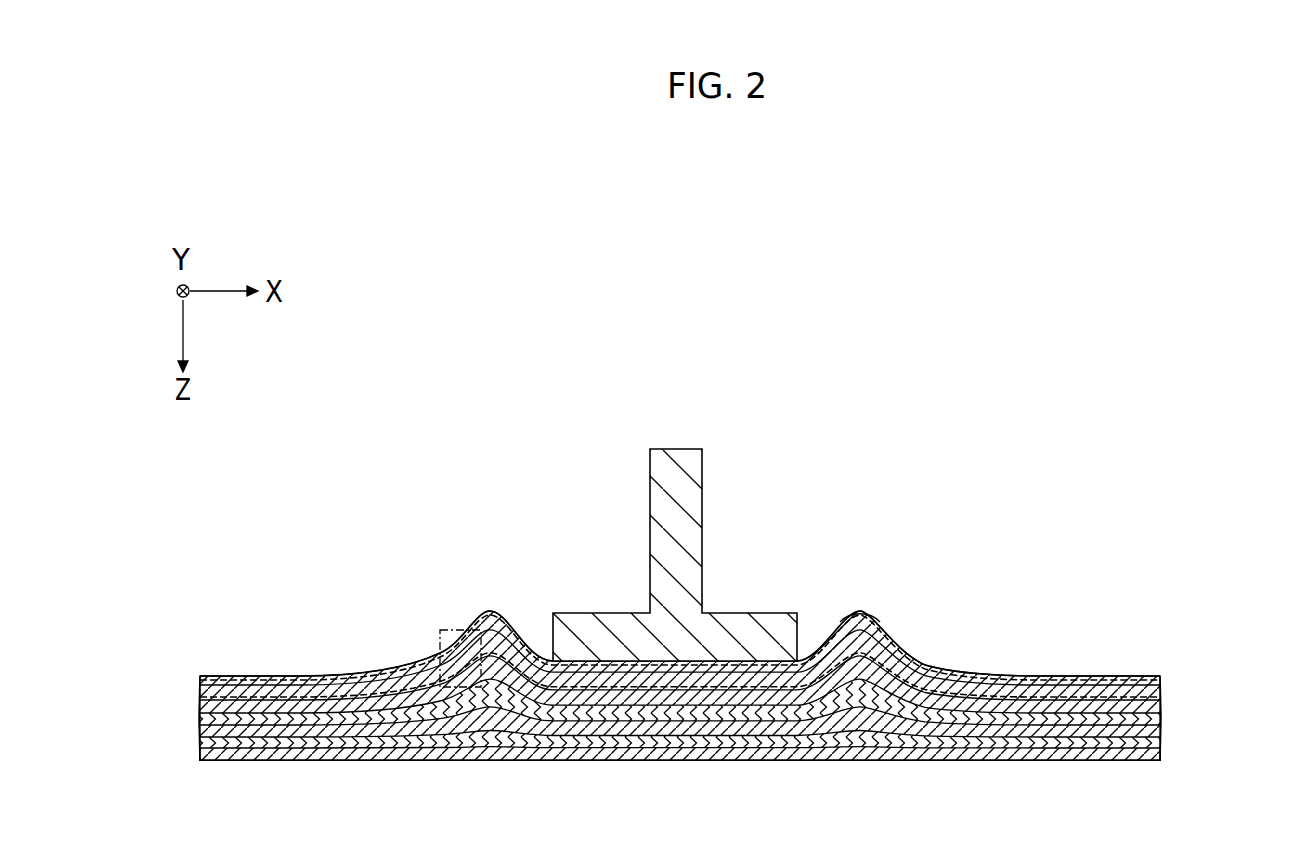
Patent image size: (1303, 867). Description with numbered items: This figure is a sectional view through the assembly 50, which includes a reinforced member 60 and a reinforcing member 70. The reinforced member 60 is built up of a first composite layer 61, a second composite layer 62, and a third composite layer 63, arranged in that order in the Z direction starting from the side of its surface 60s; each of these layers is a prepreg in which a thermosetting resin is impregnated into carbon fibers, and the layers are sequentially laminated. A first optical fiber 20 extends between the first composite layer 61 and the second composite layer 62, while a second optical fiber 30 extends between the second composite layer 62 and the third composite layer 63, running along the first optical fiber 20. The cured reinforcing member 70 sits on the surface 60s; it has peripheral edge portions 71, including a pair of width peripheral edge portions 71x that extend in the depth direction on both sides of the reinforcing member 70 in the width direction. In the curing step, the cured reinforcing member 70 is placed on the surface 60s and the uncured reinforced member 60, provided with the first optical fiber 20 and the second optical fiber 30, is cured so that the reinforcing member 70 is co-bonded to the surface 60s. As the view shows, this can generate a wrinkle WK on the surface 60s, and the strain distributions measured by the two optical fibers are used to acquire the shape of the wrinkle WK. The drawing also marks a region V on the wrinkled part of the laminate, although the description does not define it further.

The first optical fiber 20 is at (1145, 673).
The second optical fiber 30 is at (1153, 710).
The assembly 50 is at (325, 482).
The reinforced member 60 is at (250, 640).
The surface 60s is at (322, 676).
The first composite layer 61 is at (1043, 677).
The second composite layer 62 is at (1078, 688).
The third composite layer 63 is at (1118, 703).
The reinforcing member 70 is at (624, 500).
The peripheral edge portions 71 is at (680, 675).
The width peripheral edge portion 71x is at (800, 637).
The region V is at (450, 630).
The wrinkle WK is at (864, 594).